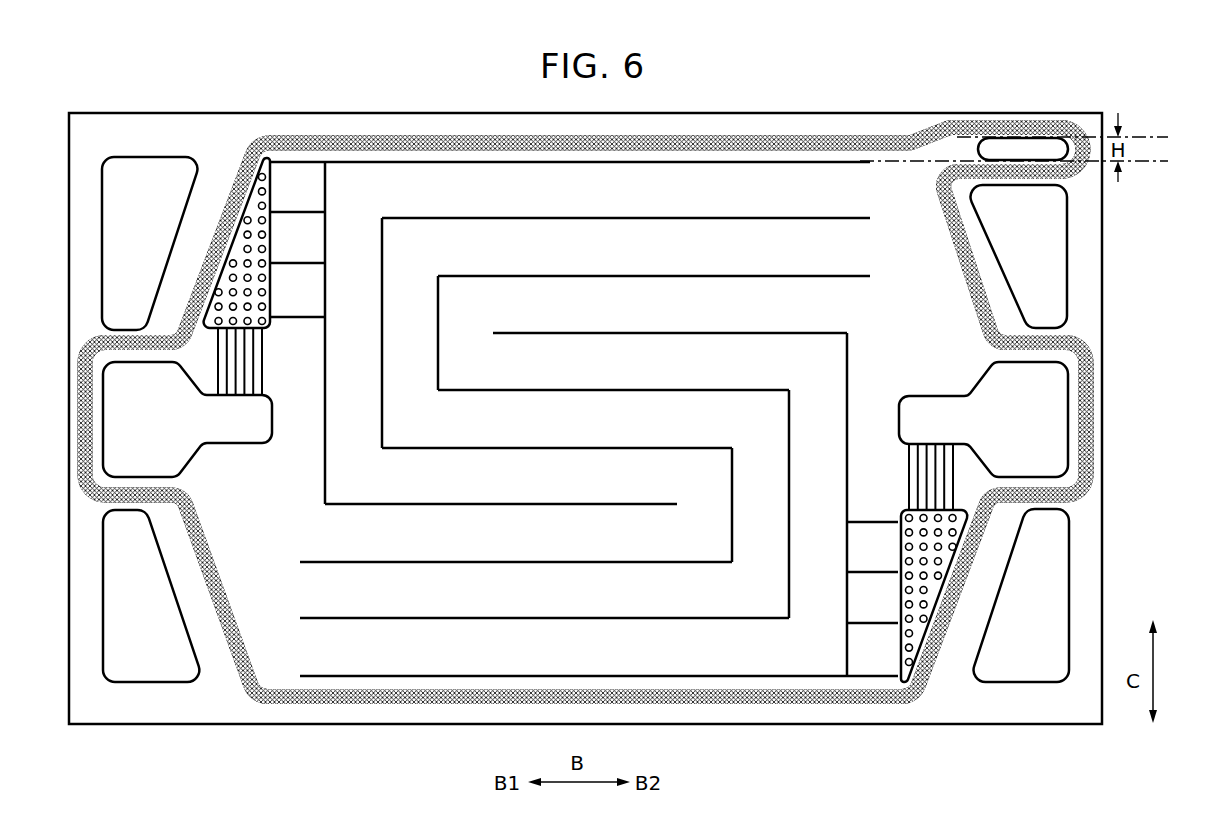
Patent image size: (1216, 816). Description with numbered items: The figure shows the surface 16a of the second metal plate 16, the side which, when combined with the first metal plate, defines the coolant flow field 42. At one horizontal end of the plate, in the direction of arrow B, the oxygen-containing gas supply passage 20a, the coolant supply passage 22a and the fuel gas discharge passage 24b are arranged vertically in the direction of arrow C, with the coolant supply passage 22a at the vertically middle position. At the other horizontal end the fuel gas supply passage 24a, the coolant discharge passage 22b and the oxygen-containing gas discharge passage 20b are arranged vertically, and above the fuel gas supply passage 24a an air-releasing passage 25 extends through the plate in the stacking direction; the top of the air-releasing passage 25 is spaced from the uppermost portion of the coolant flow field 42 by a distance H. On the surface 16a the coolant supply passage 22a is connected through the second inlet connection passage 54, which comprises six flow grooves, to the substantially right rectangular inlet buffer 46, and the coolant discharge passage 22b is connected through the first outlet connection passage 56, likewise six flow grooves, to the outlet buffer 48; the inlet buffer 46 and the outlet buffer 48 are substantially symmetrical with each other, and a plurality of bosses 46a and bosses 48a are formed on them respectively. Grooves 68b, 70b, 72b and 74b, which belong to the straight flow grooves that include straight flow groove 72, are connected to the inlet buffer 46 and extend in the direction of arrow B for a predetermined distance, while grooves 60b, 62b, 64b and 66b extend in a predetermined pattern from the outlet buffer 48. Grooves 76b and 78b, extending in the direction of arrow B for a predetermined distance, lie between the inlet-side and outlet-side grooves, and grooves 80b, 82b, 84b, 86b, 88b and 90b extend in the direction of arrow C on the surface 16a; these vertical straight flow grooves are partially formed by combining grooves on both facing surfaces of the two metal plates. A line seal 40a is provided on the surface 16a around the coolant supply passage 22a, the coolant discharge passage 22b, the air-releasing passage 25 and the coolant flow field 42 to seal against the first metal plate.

The second metal plate 16 is at (295, 86).
The surface 16a is at (585, 431).
The oxygen-containing gas supply passage 20a is at (149, 243).
The oxygen-containing gas discharge passage 20b is at (1021, 595).
The coolant supply passage 22a is at (187, 419).
The coolant discharge passage 22b is at (983, 419).
The fuel gas supply passage 24a is at (1019, 256).
The fuel gas discharge passage 24b is at (150, 596).
The air-releasing passage 25 is at (1025, 146).
The line seal 40a is at (585, 390).
The coolant flow field 42 is at (848, 152).
The inlet buffer 46 is at (263, 243).
The bosses 46a is at (266, 281).
The outlet buffer 48 is at (906, 596).
The bosses 48a is at (904, 535).
The second inlet connection passage 54 is at (265, 376).
The first outlet connection passage 56 is at (906, 478).
The groove 60b is at (494, 675).
The groove 62b is at (559, 620).
The groove 64b is at (559, 564).
The groove 66b is at (559, 506).
The groove 68b is at (560, 335).
The groove 70b is at (560, 278).
The straight flow groove 72 is at (585, 421).
The groove 72b is at (560, 220).
The groove 74b is at (560, 164).
The groove 76b is at (559, 450).
The groove 78b is at (559, 392).
The groove 80b is at (326, 430).
The groove 82b is at (849, 445).
The groove 84b is at (384, 398).
The groove 86b is at (791, 473).
The groove 88b is at (440, 368).
The groove 90b is at (734, 503).